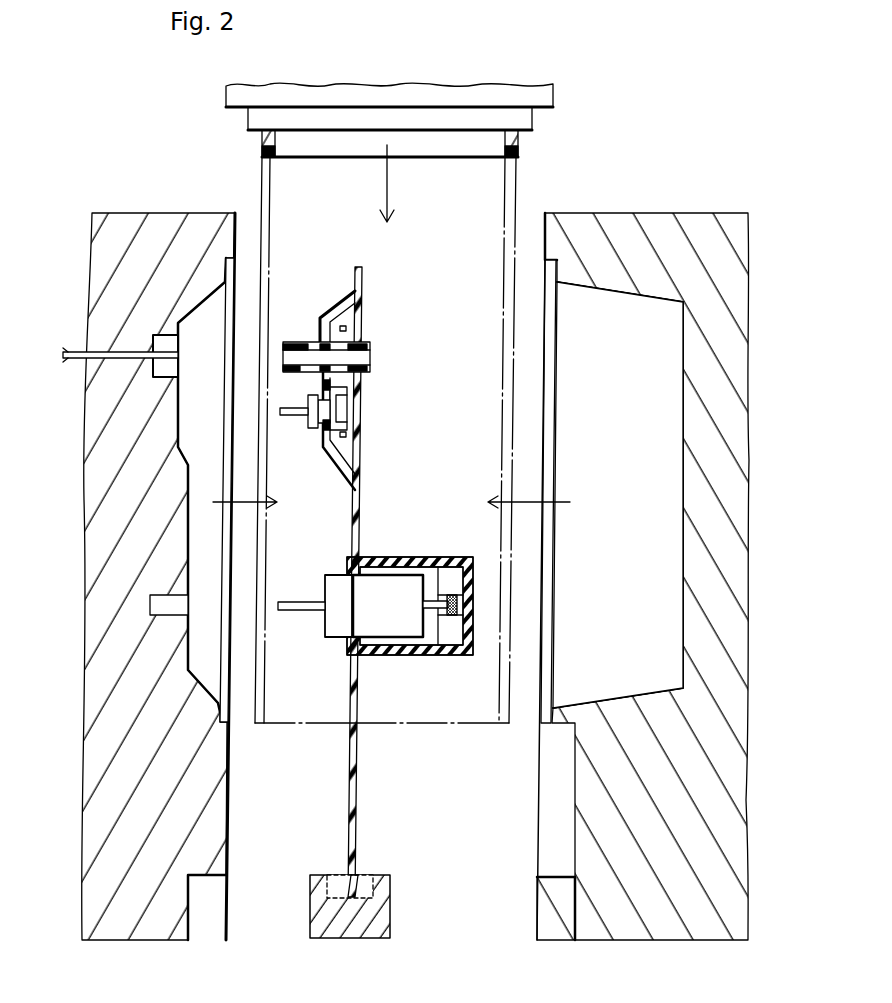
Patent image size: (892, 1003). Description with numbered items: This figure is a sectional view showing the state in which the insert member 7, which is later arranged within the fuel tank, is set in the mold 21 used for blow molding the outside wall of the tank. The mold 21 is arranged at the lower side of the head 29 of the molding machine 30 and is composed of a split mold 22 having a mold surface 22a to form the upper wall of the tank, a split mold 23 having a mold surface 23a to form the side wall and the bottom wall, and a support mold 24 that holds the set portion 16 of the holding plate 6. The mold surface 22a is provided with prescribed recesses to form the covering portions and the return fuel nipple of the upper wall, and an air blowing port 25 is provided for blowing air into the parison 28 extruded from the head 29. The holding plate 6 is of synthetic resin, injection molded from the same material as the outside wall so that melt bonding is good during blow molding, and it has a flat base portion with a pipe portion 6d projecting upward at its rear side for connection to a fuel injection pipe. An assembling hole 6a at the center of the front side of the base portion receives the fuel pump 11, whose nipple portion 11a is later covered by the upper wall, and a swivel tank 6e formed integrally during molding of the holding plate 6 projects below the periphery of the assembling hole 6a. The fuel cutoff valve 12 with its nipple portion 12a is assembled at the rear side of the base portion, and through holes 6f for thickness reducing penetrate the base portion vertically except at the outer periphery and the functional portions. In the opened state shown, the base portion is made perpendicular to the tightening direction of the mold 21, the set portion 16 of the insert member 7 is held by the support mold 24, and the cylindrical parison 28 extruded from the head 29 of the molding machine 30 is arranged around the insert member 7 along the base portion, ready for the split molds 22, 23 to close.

The mold 21 is at (678, 172).
The split mold 22 is at (170, 233).
The mold surface 22a is at (180, 430).
The split mold 23 is at (620, 228).
The mold surface 23a is at (683, 497).
The support mold 24 is at (380, 910).
The air blowing port 25 is at (175, 355).
The parison 28 is at (515, 145).
The head 29 is at (518, 118).
The molding machine 30 is at (540, 90).
The holding plate 6 is at (360, 535).
The assembling hole 6a is at (348, 590).
The pipe portion 6d is at (305, 342).
The swivel tank 6e is at (435, 560).
The through hole 6f is at (345, 328).
The insert member 7 is at (330, 737).
The fuel pump 11 is at (390, 622).
The nipple portion 11a is at (298, 608).
The fuel cutoff valve 12 is at (335, 410).
The nipple portion 12a is at (293, 418).
The set portion 16 is at (356, 790).